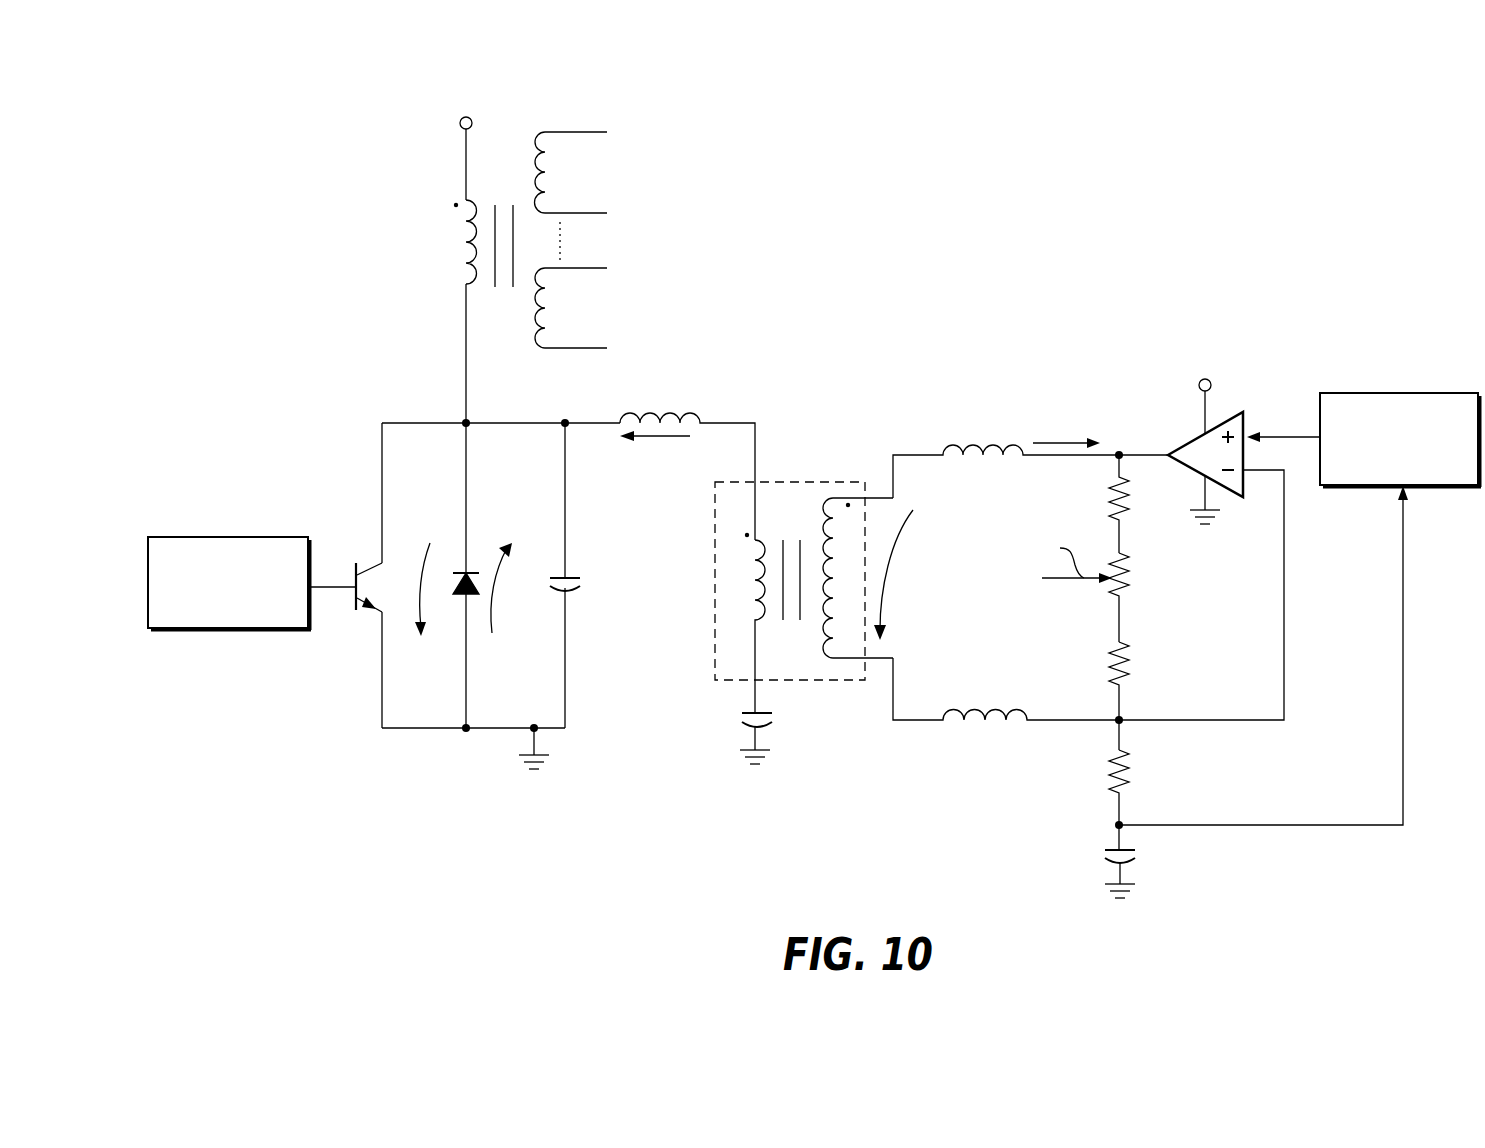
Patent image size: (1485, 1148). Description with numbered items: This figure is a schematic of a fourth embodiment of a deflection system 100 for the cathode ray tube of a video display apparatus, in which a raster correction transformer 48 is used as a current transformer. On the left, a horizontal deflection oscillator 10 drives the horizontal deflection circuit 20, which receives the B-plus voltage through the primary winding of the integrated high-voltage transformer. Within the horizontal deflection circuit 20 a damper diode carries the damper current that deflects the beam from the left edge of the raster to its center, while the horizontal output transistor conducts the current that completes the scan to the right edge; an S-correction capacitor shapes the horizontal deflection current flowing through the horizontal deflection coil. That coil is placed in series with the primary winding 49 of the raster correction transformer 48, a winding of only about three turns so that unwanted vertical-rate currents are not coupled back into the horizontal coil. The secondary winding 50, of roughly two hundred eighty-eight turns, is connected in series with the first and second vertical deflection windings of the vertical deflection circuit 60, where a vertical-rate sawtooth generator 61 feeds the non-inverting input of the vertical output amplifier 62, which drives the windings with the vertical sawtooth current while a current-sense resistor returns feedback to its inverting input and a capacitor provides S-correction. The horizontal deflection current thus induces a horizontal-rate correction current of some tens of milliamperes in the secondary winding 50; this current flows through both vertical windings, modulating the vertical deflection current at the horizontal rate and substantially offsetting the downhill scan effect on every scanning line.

The deflection system 100 is at (843, 206).
The horizontal deflection oscillator 10 is at (248, 537).
The horizontal deflection circuit 20 is at (420, 413).
The raster correction transformer 48 is at (826, 482).
The primary winding 49 is at (767, 587).
The secondary winding 50 is at (823, 625).
The vertical deflection circuit 60 is at (1088, 401).
The vertical-rate sawtooth generator 61 is at (1418, 393).
The vertical output amplifier 62 is at (1178, 448).